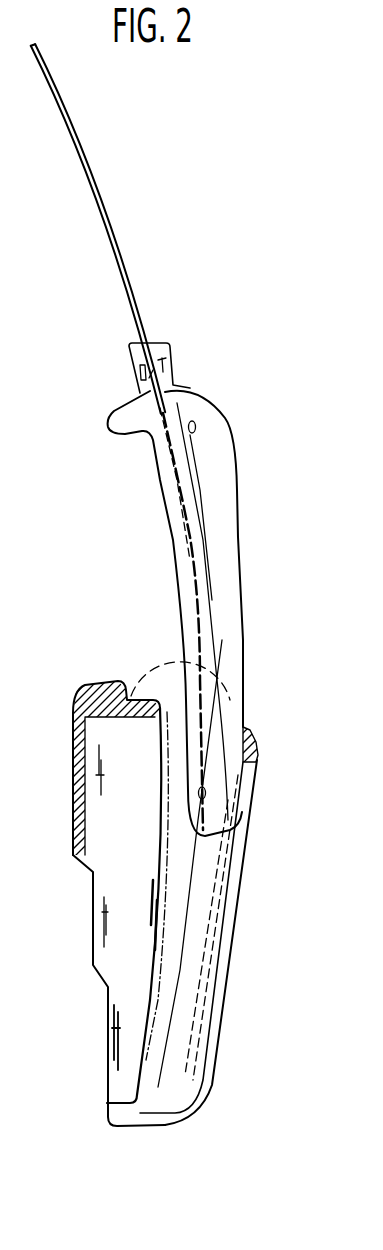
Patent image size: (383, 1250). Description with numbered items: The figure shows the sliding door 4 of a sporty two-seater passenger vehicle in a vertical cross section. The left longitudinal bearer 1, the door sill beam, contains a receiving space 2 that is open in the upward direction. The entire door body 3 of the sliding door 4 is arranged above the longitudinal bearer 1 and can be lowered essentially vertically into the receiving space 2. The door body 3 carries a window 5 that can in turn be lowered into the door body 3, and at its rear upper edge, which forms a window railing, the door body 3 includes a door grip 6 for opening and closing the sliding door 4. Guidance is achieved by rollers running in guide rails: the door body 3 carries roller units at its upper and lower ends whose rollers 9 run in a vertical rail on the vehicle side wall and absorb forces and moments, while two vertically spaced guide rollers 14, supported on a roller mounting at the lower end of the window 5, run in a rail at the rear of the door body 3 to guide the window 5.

The longitudinal bearer 1 is at (113, 1027).
The receiving space 2 is at (173, 899).
The door body 3 is at (227, 540).
The sliding door 4 is at (250, 477).
The window 5 is at (113, 242).
The door grip 6 is at (160, 358).
The rollers 9 is at (199, 423).
The guide rollers 14 is at (140, 380).